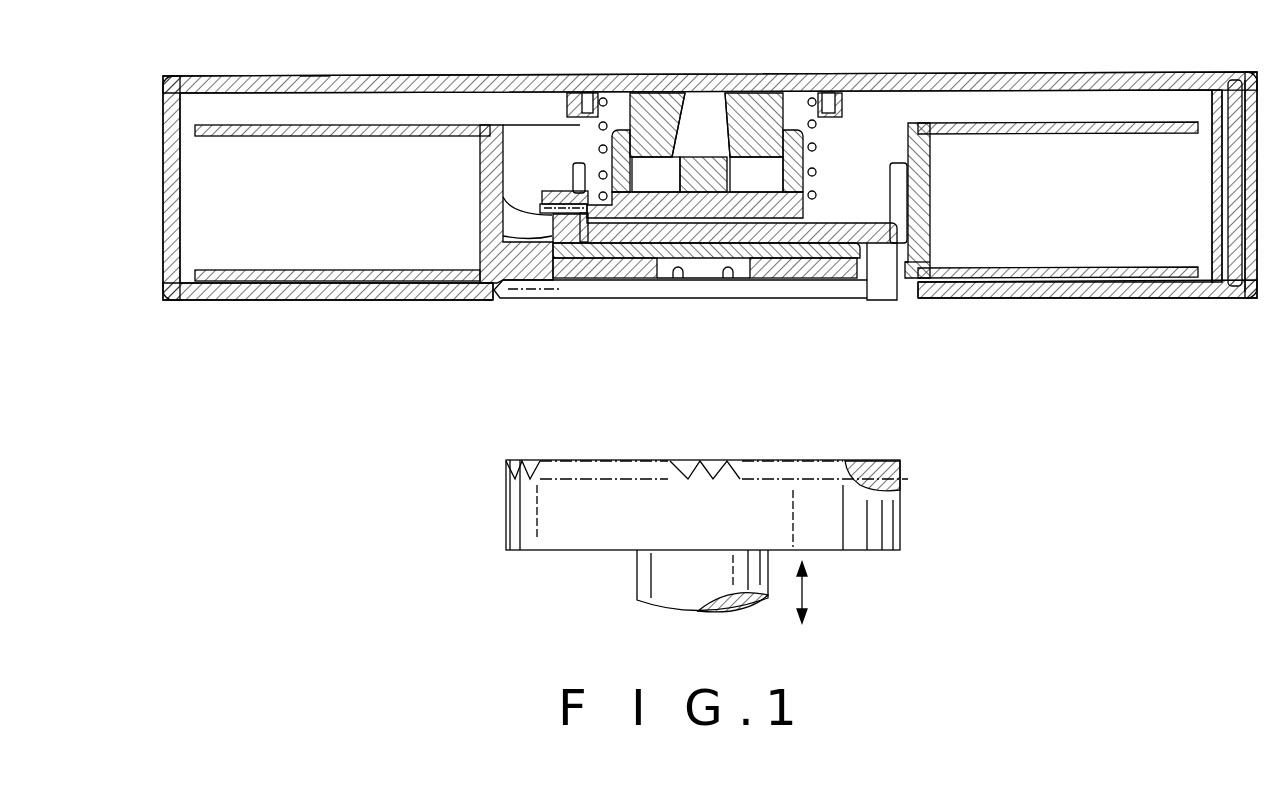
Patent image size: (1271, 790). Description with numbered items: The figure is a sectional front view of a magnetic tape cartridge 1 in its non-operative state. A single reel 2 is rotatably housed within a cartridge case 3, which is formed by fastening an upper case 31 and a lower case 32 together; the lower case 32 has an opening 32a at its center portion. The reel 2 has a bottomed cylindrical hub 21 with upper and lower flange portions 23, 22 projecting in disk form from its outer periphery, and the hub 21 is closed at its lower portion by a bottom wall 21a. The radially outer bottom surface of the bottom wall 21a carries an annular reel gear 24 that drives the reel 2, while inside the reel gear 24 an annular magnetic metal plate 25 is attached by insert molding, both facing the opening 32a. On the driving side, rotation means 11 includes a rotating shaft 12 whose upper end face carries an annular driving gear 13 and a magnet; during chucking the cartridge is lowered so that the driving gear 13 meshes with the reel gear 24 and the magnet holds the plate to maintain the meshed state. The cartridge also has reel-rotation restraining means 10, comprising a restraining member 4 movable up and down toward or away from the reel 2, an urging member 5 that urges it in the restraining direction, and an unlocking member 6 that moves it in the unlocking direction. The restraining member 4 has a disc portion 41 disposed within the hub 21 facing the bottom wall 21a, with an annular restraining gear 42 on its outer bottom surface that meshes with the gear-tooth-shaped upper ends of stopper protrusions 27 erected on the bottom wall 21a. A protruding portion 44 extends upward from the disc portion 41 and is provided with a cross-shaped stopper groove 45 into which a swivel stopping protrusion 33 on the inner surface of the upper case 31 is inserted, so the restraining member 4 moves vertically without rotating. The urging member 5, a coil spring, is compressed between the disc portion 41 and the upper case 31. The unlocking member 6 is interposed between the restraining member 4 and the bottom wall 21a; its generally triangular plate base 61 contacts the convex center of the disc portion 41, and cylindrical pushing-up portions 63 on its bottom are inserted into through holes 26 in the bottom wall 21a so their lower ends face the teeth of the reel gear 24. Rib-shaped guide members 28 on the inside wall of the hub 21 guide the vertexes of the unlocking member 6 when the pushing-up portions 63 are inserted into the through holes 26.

The magnetic tape cartridge 1 is at (373, 29).
The reel 2 is at (410, 116).
The cartridge case 3 is at (1104, 60).
The restraining member 4 is at (558, 168).
The urging member 5 is at (832, 143).
The unlocking member 6 is at (714, 258).
The reel-rotation restraining means 10 is at (875, 150).
The rotation means 11 is at (492, 508).
The rotating shaft 12 is at (652, 582).
The driving gear 13 is at (680, 461).
The partition wall 21 is at (932, 159).
The bottom wall 21a is at (735, 265).
The lower flange portion 22 is at (1108, 267).
The upper flange portion 23 is at (1121, 135).
The reel gear 24 is at (530, 302).
The magnetic metal plate 25 is at (602, 278).
The through holes 26 is at (882, 260).
The stopper protrusions 27 is at (480, 223).
The guide members 28 is at (908, 198).
The upper case 31 is at (310, 75).
The lower case 32 is at (312, 298).
The opening 32a is at (497, 303).
The swivel stopping protrusion 33 is at (680, 118).
The disc portion 41 is at (672, 232).
The restraining gear 42 is at (479, 168).
The protruding portion 44 is at (607, 98).
The stopper groove 45 is at (762, 158).
The plate base 61 is at (808, 235).
The pushing-up portions 63 is at (924, 263).